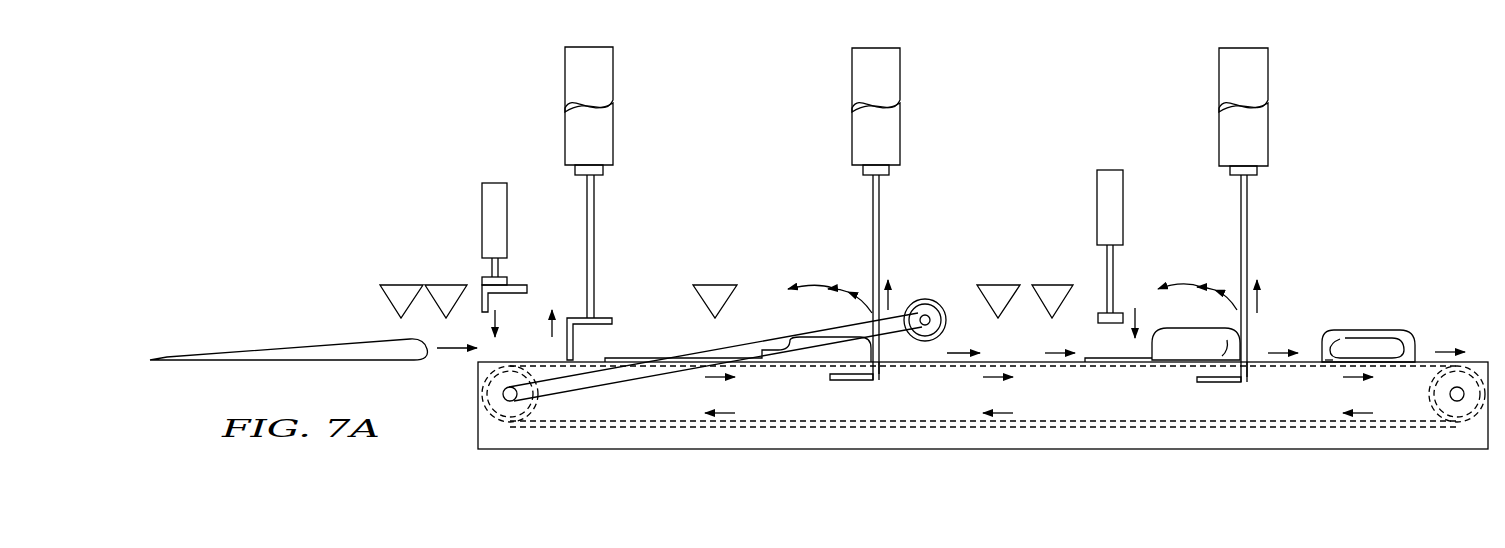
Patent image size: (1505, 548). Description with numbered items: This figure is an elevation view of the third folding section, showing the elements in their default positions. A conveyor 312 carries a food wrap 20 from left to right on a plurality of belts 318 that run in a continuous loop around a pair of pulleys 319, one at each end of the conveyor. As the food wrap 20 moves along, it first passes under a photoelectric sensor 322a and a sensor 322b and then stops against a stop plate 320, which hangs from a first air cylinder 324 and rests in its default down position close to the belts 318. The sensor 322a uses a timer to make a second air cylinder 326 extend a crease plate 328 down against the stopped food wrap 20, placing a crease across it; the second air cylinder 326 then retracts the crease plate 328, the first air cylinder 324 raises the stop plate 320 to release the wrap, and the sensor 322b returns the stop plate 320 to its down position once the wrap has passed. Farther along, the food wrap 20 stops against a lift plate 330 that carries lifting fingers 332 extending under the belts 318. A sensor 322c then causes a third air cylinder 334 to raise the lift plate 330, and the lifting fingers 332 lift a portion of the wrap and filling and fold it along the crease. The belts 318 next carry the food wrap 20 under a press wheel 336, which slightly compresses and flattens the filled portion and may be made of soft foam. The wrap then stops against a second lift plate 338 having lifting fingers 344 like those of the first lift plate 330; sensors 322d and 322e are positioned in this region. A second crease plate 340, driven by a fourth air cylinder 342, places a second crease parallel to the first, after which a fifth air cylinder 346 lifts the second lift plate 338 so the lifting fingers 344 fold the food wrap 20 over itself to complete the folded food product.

The food wrap 20 is at (1365, 338).
The conveyor 312 is at (682, 439).
The belts 318 is at (763, 425).
The pulleys 319 is at (481, 401).
The stop plate 320 is at (575, 347).
The photoelectric sensor 322a is at (400, 284).
The sensor 322b is at (445, 284).
The sensor 322c is at (715, 284).
The sensor 322d is at (997, 284).
The sensor 322e is at (1053, 284).
The first air cylinder 324 is at (566, 80).
The second air cylinder 326 is at (491, 183).
The crease plate 328 is at (482, 296).
The lift plate 330 is at (880, 376).
The lifting fingers 332 is at (855, 380).
The third air cylinder 334 is at (900, 82).
The press wheel 336 is at (930, 299).
The second lift plate 338 is at (1250, 378).
The second crease plate 340 is at (1121, 312).
The fourth air cylinder 342 is at (1112, 170).
The lifting fingers 344 is at (1222, 382).
The fifth air cylinder 346 is at (1268, 82).